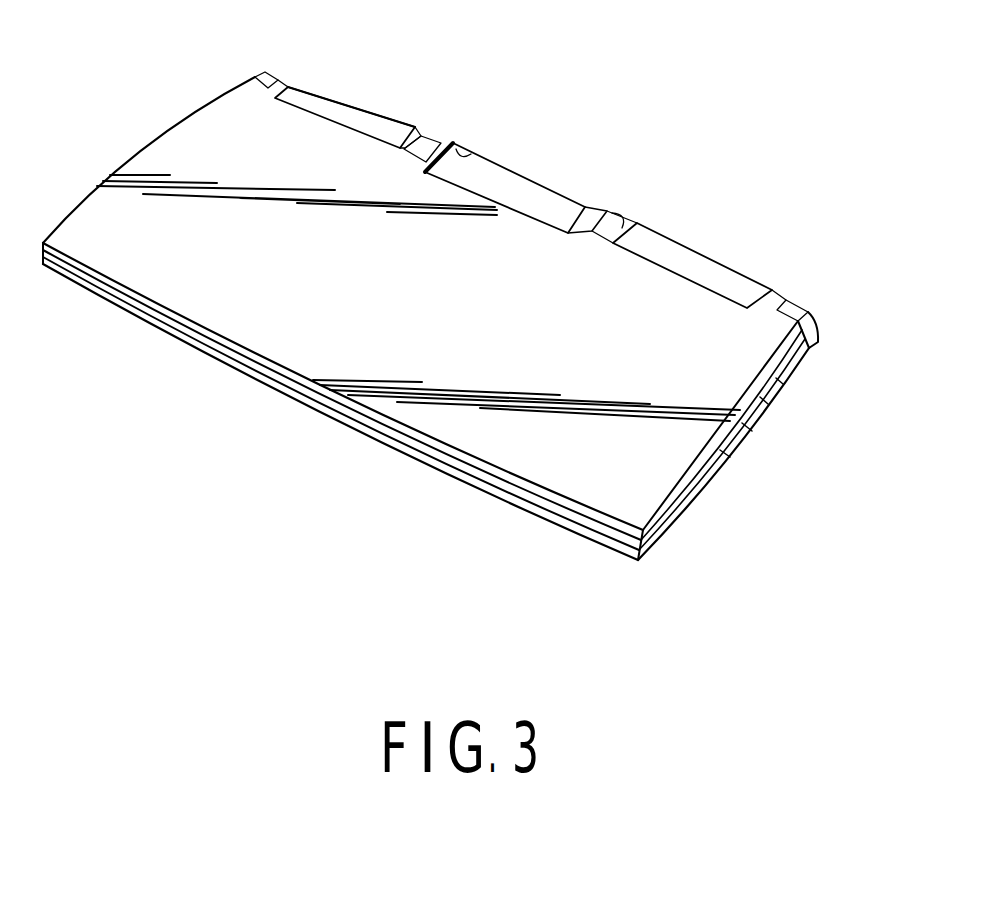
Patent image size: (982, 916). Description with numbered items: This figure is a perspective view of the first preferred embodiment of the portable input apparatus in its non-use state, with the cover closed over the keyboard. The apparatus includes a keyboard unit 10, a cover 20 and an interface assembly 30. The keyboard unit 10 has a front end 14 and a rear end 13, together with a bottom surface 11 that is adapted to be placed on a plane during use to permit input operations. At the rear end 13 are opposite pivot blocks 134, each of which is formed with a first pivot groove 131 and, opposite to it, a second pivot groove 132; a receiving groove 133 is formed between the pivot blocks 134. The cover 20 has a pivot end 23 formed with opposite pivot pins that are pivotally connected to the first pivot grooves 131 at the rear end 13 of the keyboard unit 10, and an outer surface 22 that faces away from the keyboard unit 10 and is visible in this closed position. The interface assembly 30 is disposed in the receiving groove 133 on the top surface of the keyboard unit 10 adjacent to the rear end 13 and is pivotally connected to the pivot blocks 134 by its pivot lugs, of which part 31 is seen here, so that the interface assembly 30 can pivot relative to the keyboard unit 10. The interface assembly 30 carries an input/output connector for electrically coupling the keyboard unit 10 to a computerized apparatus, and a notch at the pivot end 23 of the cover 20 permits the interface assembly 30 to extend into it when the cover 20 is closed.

The keyboard unit 10 is at (217, 357).
The bottom surface 11 is at (288, 392).
The rear end 13 is at (516, 156).
The first pivot groove 131 is at (320, 88).
The second pivot groove 132 is at (400, 133).
The receiving groove 133 is at (462, 160).
The pivot blocks 134 is at (350, 110).
The front end 14 is at (328, 405).
The cover 20 is at (447, 410).
The outer surface 22 is at (555, 463).
The pivot end 23 is at (740, 307).
The interface assembly 30 is at (513, 200).
The ramp at end of block 31 is at (567, 190).